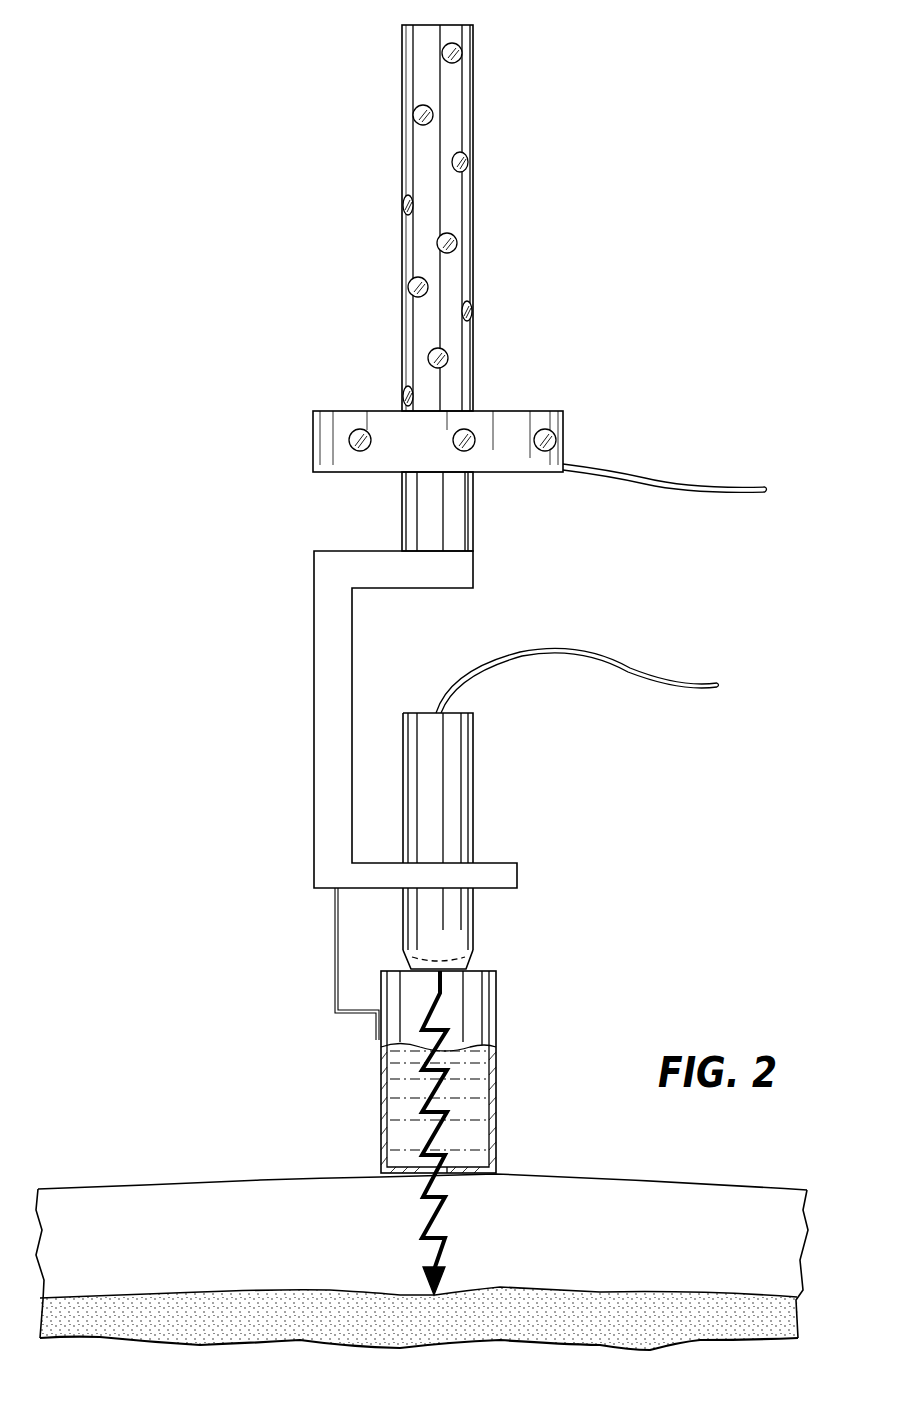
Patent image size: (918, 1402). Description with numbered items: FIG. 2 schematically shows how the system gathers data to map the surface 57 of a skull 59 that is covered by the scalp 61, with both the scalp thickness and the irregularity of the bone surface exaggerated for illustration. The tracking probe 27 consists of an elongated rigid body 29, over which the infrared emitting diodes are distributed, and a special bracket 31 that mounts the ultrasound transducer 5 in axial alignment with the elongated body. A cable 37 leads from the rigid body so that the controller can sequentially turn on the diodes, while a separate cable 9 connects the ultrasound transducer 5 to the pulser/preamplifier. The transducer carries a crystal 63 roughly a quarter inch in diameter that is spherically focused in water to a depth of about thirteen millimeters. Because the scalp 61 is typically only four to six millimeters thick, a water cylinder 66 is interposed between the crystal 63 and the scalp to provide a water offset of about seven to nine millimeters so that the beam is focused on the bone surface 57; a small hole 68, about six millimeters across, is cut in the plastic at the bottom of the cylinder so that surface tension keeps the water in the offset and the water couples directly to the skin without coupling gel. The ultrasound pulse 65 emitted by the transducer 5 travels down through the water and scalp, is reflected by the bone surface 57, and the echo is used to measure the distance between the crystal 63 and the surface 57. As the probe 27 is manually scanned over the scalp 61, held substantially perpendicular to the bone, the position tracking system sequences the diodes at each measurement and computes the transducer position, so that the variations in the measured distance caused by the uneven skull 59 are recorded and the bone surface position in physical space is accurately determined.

The tracking probe 27 is at (583, 328).
The elongated rigid body 29 is at (475, 88).
The cable 37 is at (650, 487).
The bracket 31 is at (314, 616).
The ultrasound transducer 5 is at (475, 775).
The cable 9 is at (608, 673).
The crystal 63 is at (455, 952).
The water cylinder 66 is at (497, 1062).
The ultrasound pulse 65 is at (432, 1224).
The hole 68 is at (446, 1175).
The scalp 61 is at (184, 1195).
The bone surface 57 is at (339, 1290).
The skull 59 is at (657, 1300).